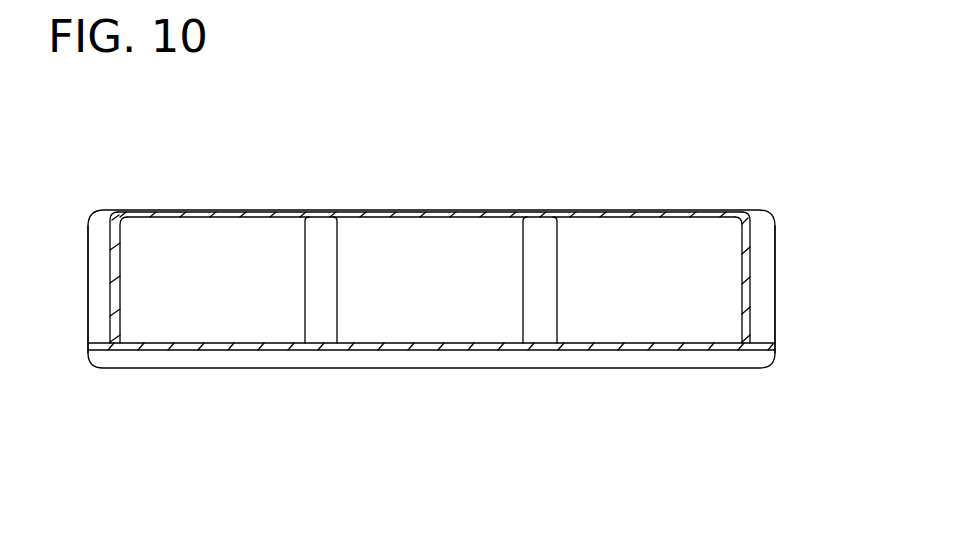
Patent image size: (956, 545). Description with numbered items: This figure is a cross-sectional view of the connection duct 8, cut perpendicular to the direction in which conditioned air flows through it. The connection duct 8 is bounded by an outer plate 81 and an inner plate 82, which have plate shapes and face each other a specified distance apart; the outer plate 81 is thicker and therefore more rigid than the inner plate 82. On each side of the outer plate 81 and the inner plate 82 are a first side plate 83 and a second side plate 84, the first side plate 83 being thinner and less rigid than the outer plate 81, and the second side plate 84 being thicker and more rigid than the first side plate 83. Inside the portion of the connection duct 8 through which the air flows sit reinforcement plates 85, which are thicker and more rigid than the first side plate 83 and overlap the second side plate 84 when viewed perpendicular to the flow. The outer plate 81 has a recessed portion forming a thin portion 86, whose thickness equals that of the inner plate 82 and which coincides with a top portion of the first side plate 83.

The connection duct 8 is at (660, 206).
The outer plate 81 is at (358, 362).
The inner plate 82 is at (360, 212).
The first side plate 83 is at (115, 322).
The second side plate 84 is at (98, 282).
The reinforcement plate 85 is at (313, 276).
The thin portion 86 is at (453, 351).